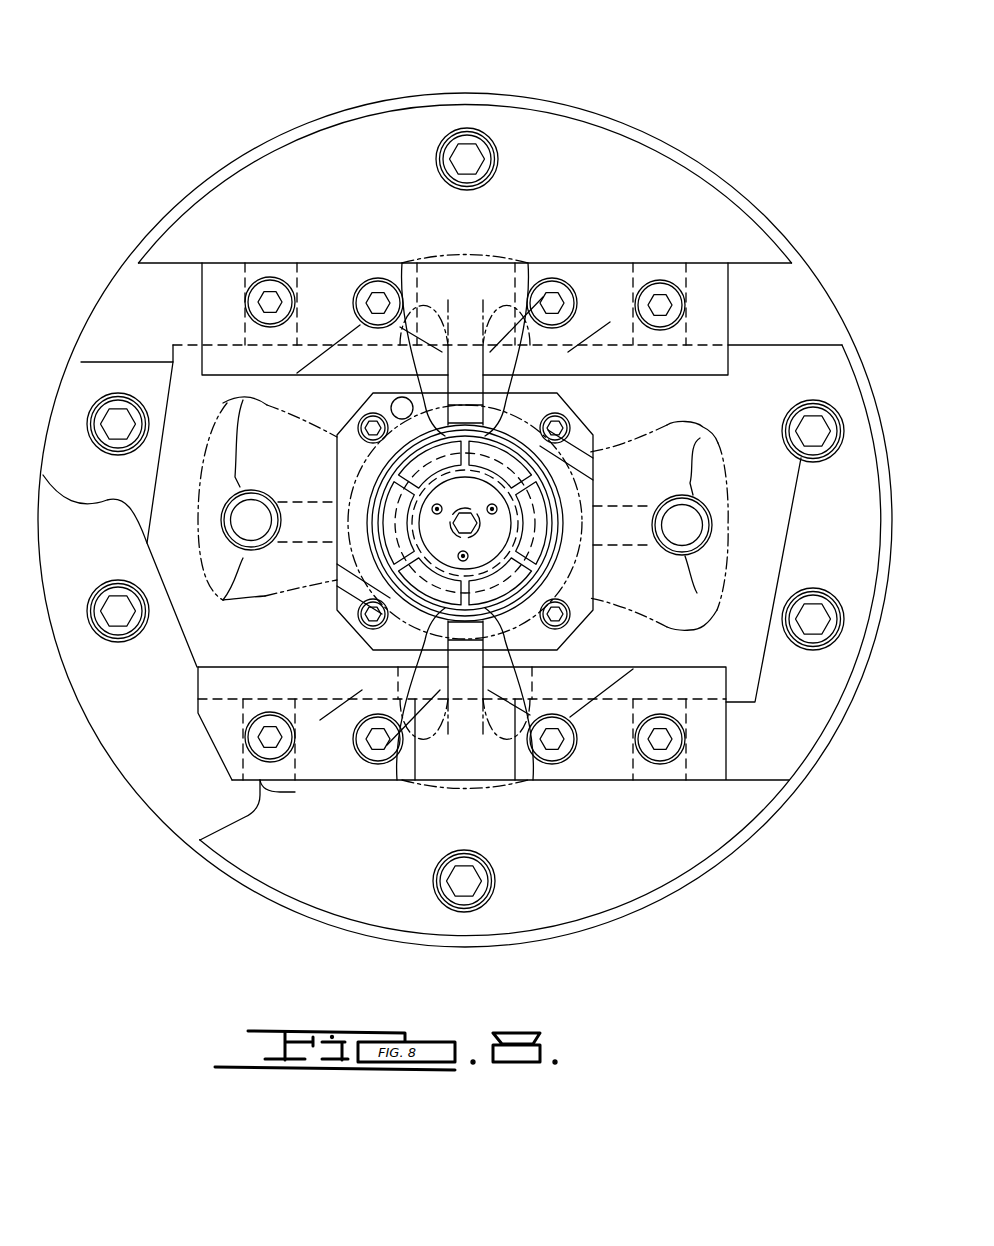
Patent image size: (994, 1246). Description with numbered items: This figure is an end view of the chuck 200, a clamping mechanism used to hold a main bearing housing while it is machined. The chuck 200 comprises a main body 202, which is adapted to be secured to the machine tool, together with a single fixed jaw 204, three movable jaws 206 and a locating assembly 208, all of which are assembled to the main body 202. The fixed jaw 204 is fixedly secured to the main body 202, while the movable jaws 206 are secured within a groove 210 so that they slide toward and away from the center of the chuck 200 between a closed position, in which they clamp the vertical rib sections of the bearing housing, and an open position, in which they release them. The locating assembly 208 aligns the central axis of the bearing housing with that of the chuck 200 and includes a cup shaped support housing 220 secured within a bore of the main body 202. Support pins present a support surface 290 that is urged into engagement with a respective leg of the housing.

The chuck 200 is at (553, 69).
The main body 202 is at (620, 130).
The fixed jaw 204 is at (345, 770).
The movable jaws 206 is at (330, 282).
The locating assembly 208 is at (263, 647).
The groove 210 is at (803, 300).
The support housing 220 is at (738, 552).
The support surface 290 is at (240, 518).